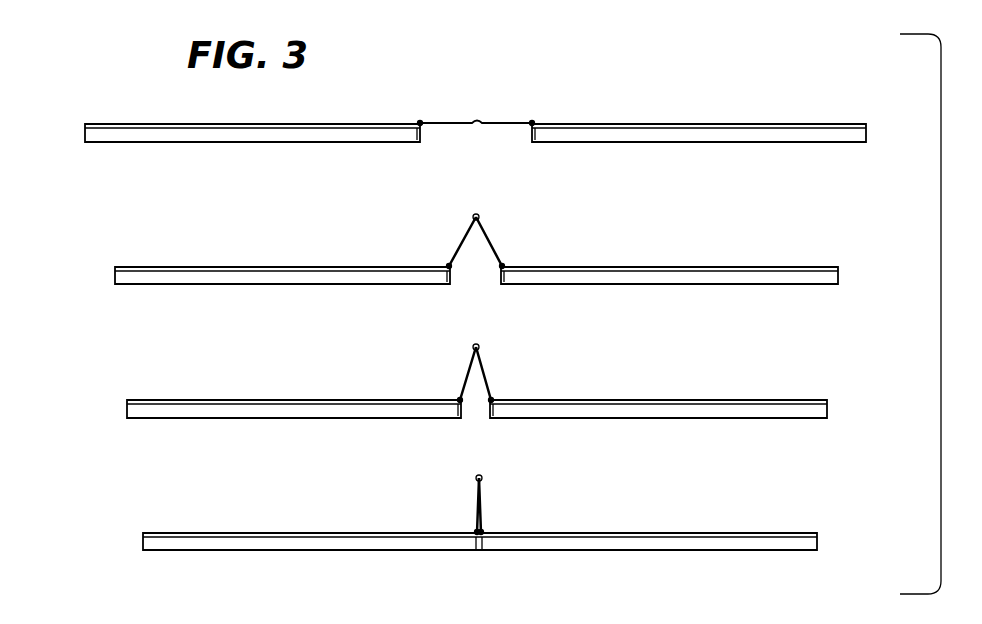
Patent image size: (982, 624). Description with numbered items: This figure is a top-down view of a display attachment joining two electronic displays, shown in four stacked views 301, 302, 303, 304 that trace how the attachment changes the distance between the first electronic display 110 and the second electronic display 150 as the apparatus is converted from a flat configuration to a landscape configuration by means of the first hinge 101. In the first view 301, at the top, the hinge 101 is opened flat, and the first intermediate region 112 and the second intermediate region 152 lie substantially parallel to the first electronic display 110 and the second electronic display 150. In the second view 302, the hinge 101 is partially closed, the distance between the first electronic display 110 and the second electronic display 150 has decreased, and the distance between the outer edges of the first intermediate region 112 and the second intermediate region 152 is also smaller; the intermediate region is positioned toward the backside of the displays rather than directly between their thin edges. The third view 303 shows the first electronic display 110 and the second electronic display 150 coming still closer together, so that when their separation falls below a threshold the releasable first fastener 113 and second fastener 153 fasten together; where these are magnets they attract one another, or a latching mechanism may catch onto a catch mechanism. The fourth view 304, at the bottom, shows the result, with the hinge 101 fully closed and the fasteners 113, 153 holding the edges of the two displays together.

The first hinge 101 is at (477, 119).
The first electronic display 110 is at (85, 133).
The first intermediate region 112 is at (441, 122).
The first fastener 113 is at (420, 145).
The second electronic display 150 is at (866, 134).
The second intermediate region 152 is at (513, 122).
The second fastener 153 is at (532, 145).
The first view 301 is at (118, 109).
The second view 302 is at (138, 251).
The third view 303 is at (148, 384).
The fourth view 304 is at (166, 520).